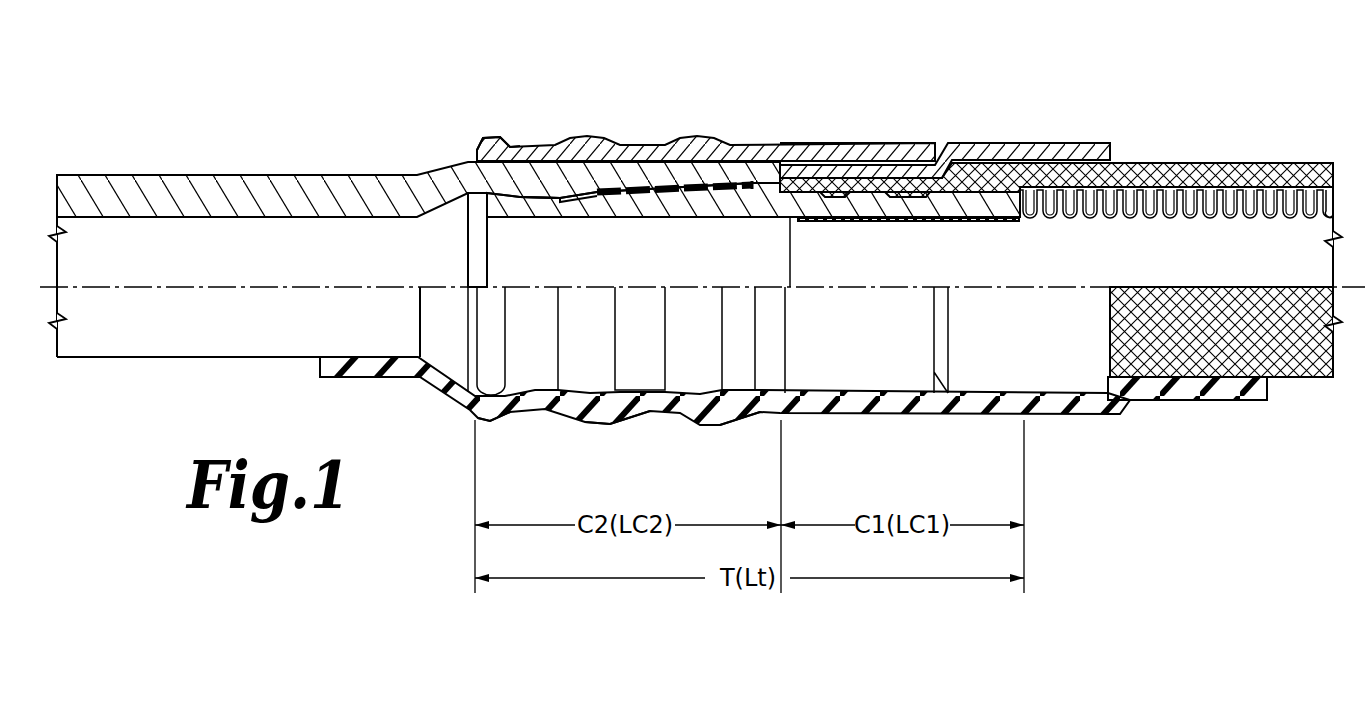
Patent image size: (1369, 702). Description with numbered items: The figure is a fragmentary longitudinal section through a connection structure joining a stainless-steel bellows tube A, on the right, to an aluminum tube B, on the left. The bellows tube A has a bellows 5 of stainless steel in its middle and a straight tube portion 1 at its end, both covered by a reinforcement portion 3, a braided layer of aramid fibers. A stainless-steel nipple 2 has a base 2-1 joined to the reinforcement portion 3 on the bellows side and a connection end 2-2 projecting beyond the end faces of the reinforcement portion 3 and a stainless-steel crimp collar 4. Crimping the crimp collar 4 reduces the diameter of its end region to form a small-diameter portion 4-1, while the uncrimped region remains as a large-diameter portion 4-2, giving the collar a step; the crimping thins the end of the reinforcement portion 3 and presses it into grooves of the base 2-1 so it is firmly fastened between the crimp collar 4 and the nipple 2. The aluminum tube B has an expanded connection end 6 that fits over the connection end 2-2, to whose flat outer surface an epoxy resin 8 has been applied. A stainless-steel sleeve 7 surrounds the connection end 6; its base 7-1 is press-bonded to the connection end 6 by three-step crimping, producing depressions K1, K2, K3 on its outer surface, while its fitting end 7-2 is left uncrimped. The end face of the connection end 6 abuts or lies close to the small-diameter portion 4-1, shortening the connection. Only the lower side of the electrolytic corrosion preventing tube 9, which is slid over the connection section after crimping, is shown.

The straight tube portion 1 is at (1012, 210).
The nipple 2 is at (1013, 180).
The base 2-1 is at (970, 206).
The connection end 2-2 is at (703, 208).
The reinforcement portion 3 is at (1147, 162).
The crimp collar 4 is at (951, 131).
The small-diameter portion 4-1 is at (866, 178).
The large-diameter portion 4-2 is at (1010, 143).
The bellows 5 is at (1148, 222).
The connection end 6 is at (587, 198).
The sleeve 7 is at (640, 136).
The base 7-1 is at (533, 147).
The fitting end 7-2 is at (839, 143).
The epoxy resin 8 is at (742, 150).
The electrolytic corrosion preventing tube 9 is at (426, 380).
The stainless-steel bellows tube A is at (1206, 156).
The aluminum tube B is at (384, 150).
The depression K1 is at (536, 426).
The depression K2 is at (640, 426).
The depression K3 is at (743, 426).